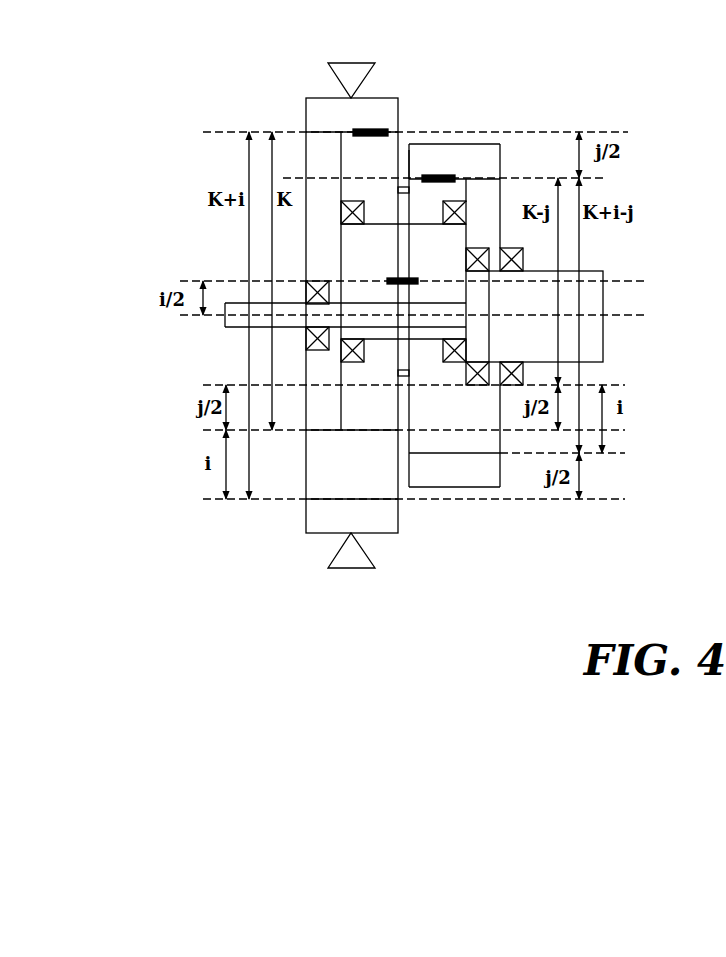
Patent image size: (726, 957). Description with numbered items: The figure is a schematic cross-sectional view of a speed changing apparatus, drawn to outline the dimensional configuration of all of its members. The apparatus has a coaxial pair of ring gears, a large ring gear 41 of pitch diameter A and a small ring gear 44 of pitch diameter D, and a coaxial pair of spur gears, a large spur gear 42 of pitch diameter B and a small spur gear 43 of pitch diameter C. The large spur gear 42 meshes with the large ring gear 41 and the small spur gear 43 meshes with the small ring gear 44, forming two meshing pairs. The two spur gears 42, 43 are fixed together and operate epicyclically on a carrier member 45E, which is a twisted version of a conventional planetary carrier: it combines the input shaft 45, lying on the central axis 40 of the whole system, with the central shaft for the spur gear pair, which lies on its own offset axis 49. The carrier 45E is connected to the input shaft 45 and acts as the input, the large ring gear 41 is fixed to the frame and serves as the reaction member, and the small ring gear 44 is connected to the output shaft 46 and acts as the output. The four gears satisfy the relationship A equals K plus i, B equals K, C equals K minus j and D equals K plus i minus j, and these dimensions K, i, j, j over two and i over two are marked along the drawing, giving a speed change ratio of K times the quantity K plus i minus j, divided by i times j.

The central axis 40 is at (637, 317).
The large ring gear 41 is at (322, 110).
The large spur gear 42 is at (385, 145).
The small spur gear 43 is at (455, 188).
The small ring gear 44 is at (433, 157).
The input shaft 45 is at (238, 303).
The carrier member 45E is at (353, 247).
The output shaft 46 is at (590, 295).
The axis of the spur gear pair 49 is at (637, 282).